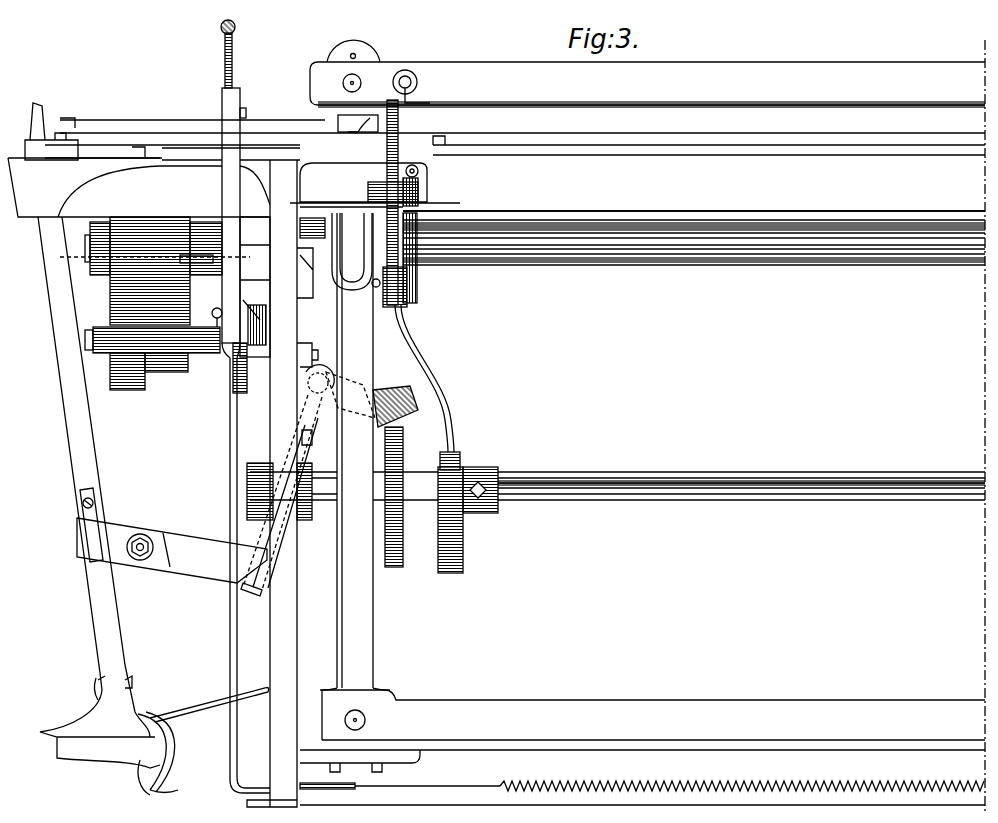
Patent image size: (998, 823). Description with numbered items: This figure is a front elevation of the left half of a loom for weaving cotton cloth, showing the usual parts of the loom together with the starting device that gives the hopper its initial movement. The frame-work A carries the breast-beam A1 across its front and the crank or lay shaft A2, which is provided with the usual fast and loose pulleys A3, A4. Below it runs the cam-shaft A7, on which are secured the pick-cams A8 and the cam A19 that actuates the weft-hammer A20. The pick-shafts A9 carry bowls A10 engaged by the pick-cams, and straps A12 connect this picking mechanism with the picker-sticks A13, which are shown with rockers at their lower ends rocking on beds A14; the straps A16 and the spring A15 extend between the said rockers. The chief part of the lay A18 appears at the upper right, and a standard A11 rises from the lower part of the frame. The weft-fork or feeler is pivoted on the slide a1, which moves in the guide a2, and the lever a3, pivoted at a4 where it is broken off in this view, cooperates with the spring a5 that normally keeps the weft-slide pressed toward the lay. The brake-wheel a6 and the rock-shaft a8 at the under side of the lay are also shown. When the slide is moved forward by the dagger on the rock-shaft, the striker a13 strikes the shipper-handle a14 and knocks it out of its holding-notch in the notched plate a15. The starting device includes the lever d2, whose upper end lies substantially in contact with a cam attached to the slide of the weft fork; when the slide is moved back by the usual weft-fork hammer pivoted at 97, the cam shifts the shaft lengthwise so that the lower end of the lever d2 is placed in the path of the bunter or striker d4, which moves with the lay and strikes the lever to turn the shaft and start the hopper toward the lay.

The frame-work A is at (647, 74).
The breast-beam A1 is at (452, 152).
The crank or lay shaft A2 is at (914, 250).
The fast pulley A3 is at (98, 302).
The loose pulley A4 is at (176, 394).
The cam-shaft A7 is at (858, 462).
The pick-cams A8 is at (410, 584).
The pick-shafts A9 is at (322, 372).
The bowls A10 is at (396, 380).
The standard A11 is at (355, 451).
The straps A12 is at (190, 564).
The picker-sticks A13 is at (96, 450).
The beds A14 is at (92, 755).
The spring A15 is at (598, 770).
The straps A16 is at (152, 792).
The lay A18 is at (858, 194).
The cam A19 is at (486, 555).
The weft-hammer A20 is at (432, 387).
The slide a1 is at (398, 123).
The guide a2 is at (374, 116).
The lever a3 is at (386, 150).
The pivot a4 is at (368, 190).
The spring a5 is at (405, 172).
The brake-wheel a6 is at (246, 390).
The rock-shaft a8 is at (690, 228).
The striker a13 is at (195, 264).
The shipper-handle a14 is at (231, 93).
The notched plate a15 is at (198, 155).
The lever d2 is at (372, 255).
The bunter or striker d4 is at (297, 210).
The pivot of weft-fork hammer 97 is at (408, 300).